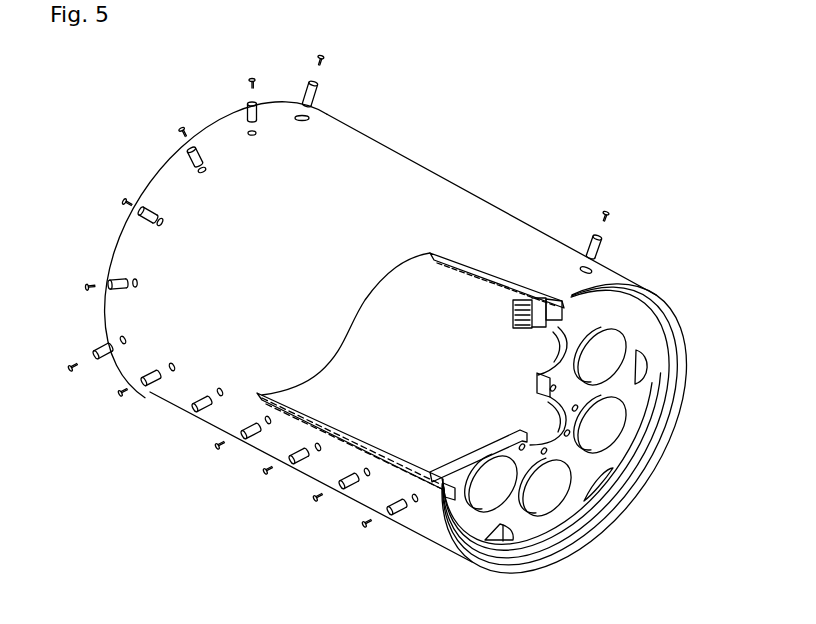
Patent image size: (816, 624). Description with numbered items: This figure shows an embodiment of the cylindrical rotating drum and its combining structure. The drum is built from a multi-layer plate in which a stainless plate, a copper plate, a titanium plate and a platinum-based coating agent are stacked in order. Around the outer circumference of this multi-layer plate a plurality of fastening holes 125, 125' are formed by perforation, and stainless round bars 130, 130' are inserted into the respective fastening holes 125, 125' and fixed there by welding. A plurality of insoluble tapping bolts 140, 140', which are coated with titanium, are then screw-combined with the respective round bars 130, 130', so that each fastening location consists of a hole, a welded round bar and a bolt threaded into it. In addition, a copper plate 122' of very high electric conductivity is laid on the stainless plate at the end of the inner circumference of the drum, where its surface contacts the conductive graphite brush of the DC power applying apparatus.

The copper plate 122' is at (356, 503).
The fastening hole 125 is at (652, 271).
The fastening hole 125' is at (370, 120).
The round bar 130 is at (644, 247).
The round bar 130' is at (363, 93).
The insoluble tapping bolt 140 is at (656, 215).
The insoluble tapping bolt 140' is at (374, 63).